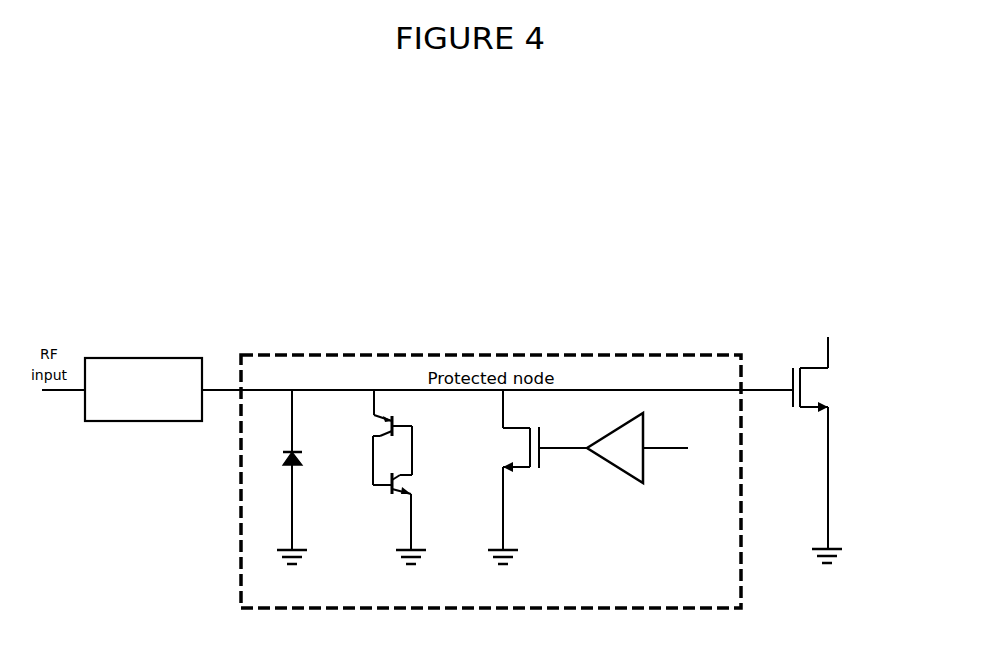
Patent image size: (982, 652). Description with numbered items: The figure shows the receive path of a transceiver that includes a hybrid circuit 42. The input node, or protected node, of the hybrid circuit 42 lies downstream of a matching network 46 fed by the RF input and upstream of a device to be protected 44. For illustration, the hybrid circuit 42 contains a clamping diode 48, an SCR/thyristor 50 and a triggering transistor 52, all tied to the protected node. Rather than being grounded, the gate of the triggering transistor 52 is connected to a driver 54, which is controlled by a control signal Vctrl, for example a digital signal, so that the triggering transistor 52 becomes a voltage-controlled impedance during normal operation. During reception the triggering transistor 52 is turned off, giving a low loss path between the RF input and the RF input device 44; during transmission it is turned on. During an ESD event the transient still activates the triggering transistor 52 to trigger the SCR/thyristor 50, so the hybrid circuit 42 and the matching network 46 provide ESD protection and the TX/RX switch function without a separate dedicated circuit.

The hybrid circuit 42 is at (227, 512).
The device to be protected 44 is at (835, 389).
The matching network 46 is at (144, 332).
The clamping diode 48 is at (312, 475).
The SCR/thyristor 50 is at (420, 473).
The triggering transistor 52 is at (533, 482).
The driver 54 is at (613, 472).